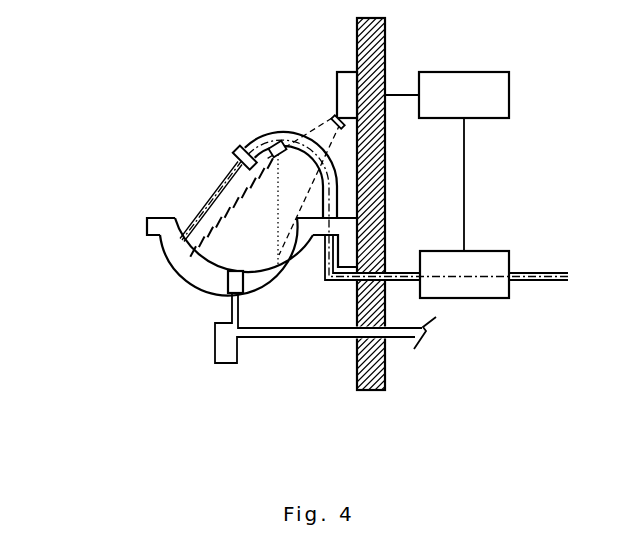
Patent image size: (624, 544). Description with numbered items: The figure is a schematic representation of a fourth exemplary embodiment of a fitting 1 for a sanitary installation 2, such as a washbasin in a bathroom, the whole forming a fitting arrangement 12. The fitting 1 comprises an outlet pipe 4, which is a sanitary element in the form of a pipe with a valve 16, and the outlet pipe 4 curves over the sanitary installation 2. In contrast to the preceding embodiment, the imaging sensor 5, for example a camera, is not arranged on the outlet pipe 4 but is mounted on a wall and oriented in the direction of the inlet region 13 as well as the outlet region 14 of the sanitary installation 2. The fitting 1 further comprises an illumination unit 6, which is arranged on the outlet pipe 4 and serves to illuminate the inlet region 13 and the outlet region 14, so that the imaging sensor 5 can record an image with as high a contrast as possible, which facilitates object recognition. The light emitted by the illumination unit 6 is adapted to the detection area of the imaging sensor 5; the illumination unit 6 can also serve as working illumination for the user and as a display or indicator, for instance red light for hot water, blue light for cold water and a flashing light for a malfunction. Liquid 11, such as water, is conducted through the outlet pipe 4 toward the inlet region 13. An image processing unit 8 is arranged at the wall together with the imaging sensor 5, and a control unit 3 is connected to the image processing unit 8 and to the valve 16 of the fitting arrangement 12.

The fitting 1 is at (178, 82).
The sanitary installation 2 is at (160, 264).
The control unit 3 is at (458, 106).
The outlet pipe 4 is at (238, 142).
The imaging sensor 5 is at (328, 108).
The illumination unit 6 is at (268, 139).
The image processing unit 8 is at (331, 78).
The liquid 11 is at (221, 181).
The fitting arrangement 12 is at (105, 186).
The inlet region 13 is at (207, 214).
The outlet region 14 is at (243, 269).
The valve 16 is at (476, 285).